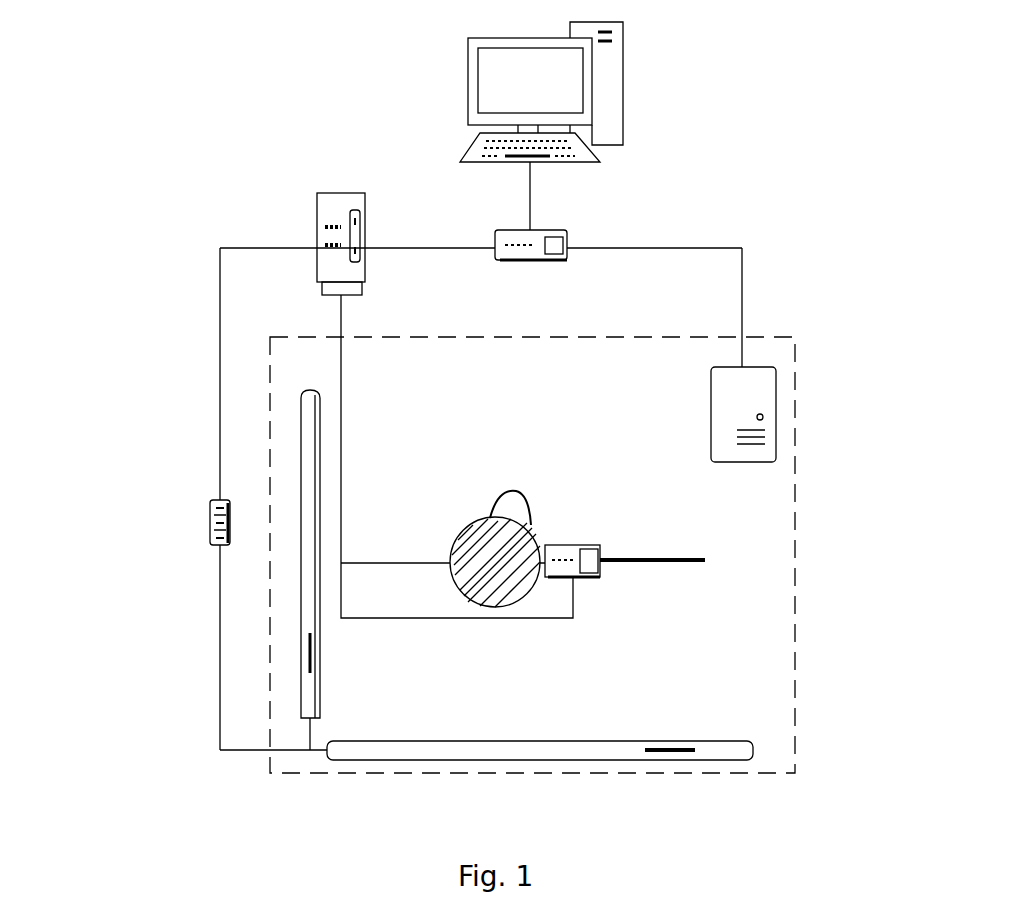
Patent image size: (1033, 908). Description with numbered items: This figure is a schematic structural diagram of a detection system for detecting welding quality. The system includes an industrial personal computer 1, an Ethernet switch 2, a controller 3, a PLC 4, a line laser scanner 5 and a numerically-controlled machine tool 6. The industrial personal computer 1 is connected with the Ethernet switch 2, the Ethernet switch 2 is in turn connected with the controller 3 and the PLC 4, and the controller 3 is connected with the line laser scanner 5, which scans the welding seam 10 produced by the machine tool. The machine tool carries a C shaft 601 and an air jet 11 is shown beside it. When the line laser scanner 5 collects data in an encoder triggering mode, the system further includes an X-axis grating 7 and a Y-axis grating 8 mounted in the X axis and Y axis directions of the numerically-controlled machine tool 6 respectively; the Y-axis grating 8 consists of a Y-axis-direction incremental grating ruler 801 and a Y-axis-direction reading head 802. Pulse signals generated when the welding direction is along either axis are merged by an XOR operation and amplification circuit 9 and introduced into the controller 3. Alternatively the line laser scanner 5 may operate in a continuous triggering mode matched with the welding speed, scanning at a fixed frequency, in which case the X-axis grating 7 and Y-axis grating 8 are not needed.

The industrial personal computer 1 is at (602, 78).
The Ethernet switch 2 is at (567, 243).
The controller 3 is at (330, 205).
The PLC 4 is at (778, 388).
The line laser scanner 5 is at (600, 577).
The numerically-controlled machine tool 6 is at (796, 495).
The X-axis grating 7 is at (728, 748).
The Y-axis grating 8 is at (189, 559).
The Y-axis-direction incremental grating ruler 801 is at (303, 690).
The Y-axis-direction reading head 802 is at (303, 657).
The XOR operation and amplification circuit 9 is at (210, 530).
The welding seam 10 is at (705, 560).
The air jet 11 is at (505, 497).
The C shaft 601 is at (483, 553).